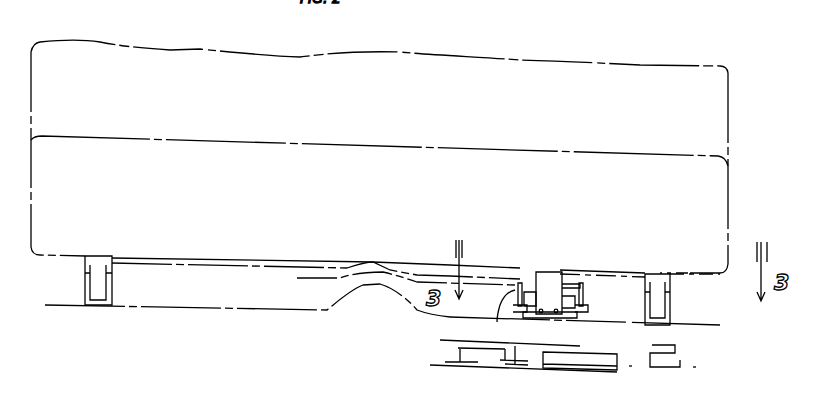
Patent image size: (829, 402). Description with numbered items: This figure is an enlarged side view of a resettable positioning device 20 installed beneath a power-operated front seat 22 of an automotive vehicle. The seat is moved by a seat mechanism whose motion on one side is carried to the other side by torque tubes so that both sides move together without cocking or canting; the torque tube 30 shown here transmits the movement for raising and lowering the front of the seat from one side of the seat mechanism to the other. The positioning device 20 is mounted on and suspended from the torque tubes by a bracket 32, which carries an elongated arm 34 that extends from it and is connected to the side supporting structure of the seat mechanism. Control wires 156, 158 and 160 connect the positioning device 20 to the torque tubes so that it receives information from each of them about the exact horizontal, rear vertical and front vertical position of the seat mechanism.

The power-operated front seat 22 is at (688, 191).
The torque tube 30 is at (304, 265).
The elongated arm 34 is at (624, 276).
The bracket 32 is at (546, 283).
The resettable positioning device 20 is at (530, 280).
The control wire 160 is at (582, 300).
The control wire 158 is at (590, 296).
The control wire 156 is at (497, 322).